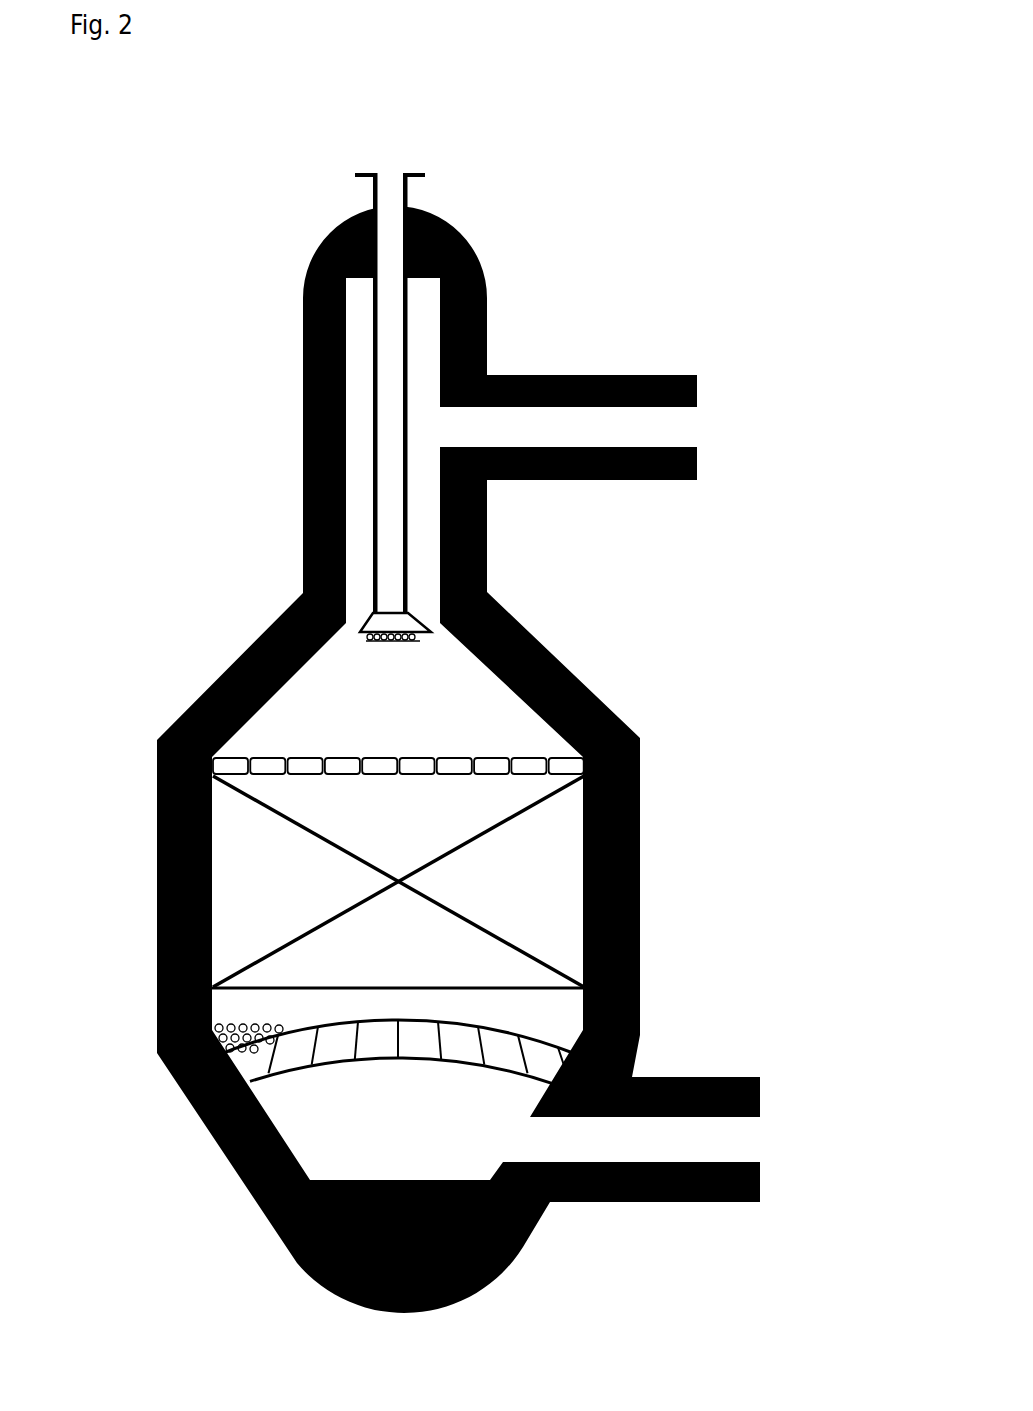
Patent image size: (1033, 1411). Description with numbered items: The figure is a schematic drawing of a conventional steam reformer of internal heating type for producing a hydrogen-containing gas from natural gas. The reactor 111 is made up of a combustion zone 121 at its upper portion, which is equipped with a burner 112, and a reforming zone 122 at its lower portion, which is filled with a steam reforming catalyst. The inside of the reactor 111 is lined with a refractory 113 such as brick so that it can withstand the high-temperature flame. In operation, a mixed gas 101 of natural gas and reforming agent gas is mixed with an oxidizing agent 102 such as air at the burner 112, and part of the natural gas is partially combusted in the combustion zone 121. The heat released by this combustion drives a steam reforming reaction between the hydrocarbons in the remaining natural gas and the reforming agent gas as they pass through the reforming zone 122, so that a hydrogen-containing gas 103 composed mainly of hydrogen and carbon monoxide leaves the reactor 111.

The mixed gas 101 is at (698, 423).
The oxidizing agent 102 is at (387, 162).
The hydrogen-containing gas 103 is at (757, 1142).
The reactor 111 is at (145, 887).
The burner 112 is at (375, 648).
The refractory 113 is at (643, 775).
The combustion zone 121 is at (455, 703).
The reforming zone 122 is at (548, 863).